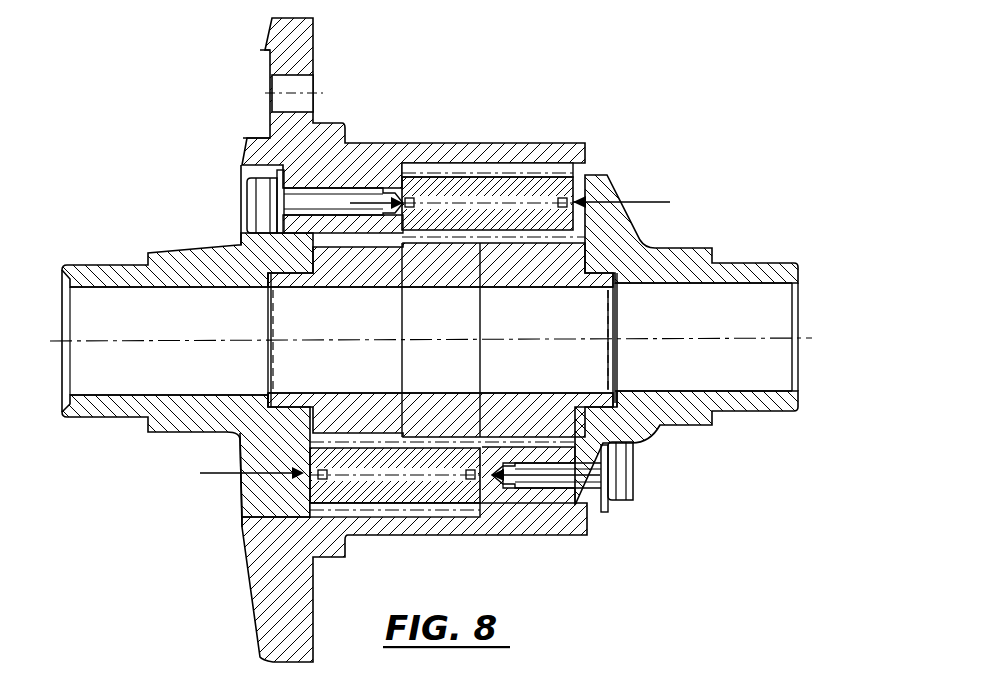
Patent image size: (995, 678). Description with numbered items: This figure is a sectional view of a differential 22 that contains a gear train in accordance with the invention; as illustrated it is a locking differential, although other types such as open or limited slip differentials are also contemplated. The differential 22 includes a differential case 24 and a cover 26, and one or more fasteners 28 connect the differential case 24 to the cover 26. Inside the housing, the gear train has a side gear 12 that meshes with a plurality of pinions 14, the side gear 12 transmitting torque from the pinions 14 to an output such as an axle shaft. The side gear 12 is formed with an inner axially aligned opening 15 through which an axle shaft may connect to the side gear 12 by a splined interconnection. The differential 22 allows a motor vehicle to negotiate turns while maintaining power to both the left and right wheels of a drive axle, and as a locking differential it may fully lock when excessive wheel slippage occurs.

The side gear 12 is at (552, 267).
The pinion 14 is at (492, 187).
The inner axially aligned opening 15 is at (593, 303).
The differential 22 is at (537, 103).
The differential case 24 is at (287, 38).
The cover 26 is at (205, 255).
The fastener 28 is at (258, 200).